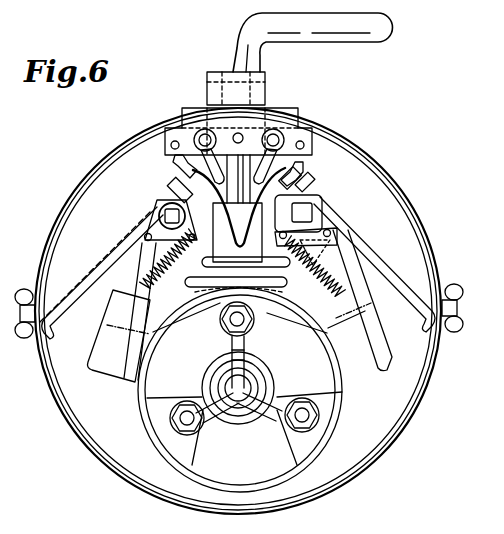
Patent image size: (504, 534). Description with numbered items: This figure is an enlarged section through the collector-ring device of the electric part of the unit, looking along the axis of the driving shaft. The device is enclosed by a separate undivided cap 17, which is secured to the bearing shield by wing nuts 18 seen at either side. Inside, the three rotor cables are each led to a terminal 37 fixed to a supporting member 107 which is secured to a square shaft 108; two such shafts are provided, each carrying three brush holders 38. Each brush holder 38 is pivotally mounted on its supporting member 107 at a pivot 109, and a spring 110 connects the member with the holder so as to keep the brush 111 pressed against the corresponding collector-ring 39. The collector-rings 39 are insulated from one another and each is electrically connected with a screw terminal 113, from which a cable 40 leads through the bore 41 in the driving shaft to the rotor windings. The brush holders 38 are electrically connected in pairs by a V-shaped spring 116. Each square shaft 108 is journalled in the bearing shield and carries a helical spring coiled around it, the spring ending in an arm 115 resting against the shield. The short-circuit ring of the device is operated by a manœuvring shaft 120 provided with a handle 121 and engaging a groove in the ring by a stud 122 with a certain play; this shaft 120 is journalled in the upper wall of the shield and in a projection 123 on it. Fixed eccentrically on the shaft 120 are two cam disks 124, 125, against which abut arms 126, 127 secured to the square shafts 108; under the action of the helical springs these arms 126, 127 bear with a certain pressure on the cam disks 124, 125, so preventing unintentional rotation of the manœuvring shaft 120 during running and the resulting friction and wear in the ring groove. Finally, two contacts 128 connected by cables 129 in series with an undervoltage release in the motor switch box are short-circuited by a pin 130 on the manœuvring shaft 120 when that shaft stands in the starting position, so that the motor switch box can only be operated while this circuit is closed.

The cap 17 is at (316, 118).
The wing nuts 18 is at (22, 296).
The terminal 37 is at (176, 158).
The brush holder 38 is at (133, 262).
The collector-ring 39 is at (140, 383).
The cable 40 is at (258, 380).
The bore 41 is at (240, 402).
The supporting member 107 is at (166, 203).
The square shaft 108 is at (165, 214).
The pivot 109 is at (143, 235).
The spring 110 is at (160, 284).
The brush 111 is at (116, 372).
The screw terminal 113 is at (183, 421).
The arm 115 is at (100, 278).
The V-shaped spring 116 is at (311, 195).
The manœuvring shaft 120 is at (294, 183).
The handle 121 is at (392, 27).
The stud 122 is at (212, 304).
The projection 123 is at (213, 222).
The cam disk 124 is at (340, 272).
The cam disk 125 is at (203, 292).
The arm 126 is at (200, 263).
The arm 127 is at (292, 290).
The contacts 128 is at (199, 133).
The cables 129 is at (258, 170).
The pin 130 is at (232, 133).